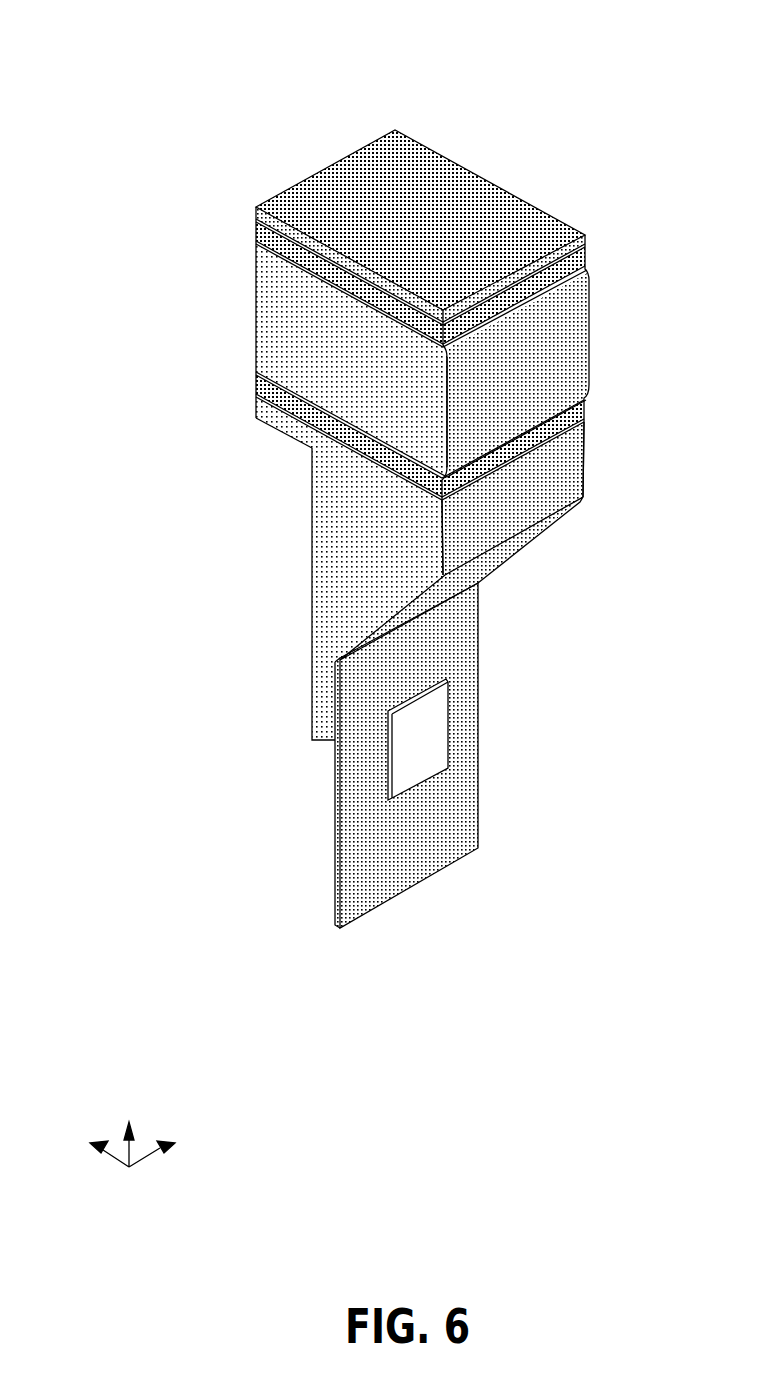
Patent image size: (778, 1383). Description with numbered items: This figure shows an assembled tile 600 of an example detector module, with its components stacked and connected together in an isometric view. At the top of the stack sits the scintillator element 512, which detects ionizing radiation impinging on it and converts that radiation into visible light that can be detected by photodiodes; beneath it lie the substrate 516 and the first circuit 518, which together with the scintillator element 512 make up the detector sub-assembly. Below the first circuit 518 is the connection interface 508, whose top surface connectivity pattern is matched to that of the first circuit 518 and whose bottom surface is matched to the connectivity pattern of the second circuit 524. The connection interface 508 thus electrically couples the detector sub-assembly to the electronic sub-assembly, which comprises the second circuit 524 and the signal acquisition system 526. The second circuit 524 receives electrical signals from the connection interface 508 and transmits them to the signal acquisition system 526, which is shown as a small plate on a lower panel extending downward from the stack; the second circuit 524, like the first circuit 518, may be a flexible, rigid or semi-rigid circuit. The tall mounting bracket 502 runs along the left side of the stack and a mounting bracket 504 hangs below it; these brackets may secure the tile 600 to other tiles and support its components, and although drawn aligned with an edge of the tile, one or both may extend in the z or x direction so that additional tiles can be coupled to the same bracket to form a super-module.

The assembled tile 600 is at (126, 32).
The mounting bracket 502 is at (255, 305).
The mounting bracket 504 is at (311, 530).
The connection interface 508 is at (578, 403).
The scintillator element 512 is at (517, 195).
The substrate 516 is at (585, 257).
The first circuit 518 is at (590, 328).
The second circuit 524 is at (587, 462).
The signal acquisition system 526 is at (451, 727).